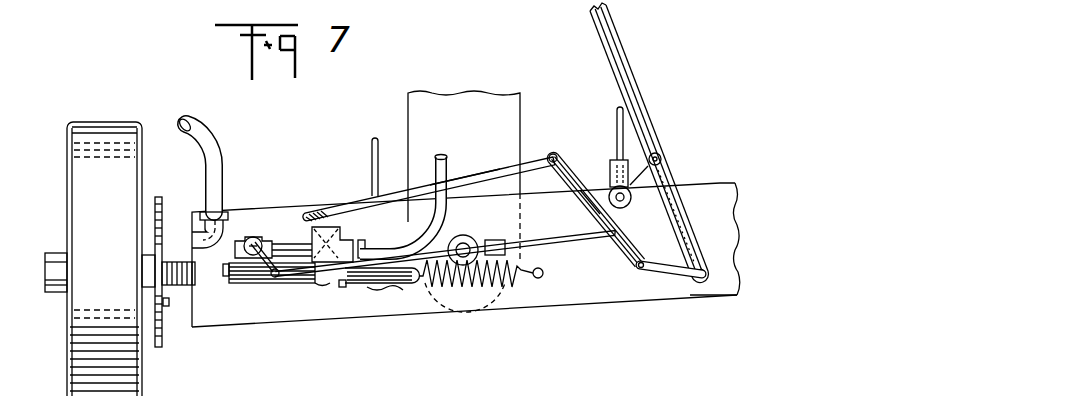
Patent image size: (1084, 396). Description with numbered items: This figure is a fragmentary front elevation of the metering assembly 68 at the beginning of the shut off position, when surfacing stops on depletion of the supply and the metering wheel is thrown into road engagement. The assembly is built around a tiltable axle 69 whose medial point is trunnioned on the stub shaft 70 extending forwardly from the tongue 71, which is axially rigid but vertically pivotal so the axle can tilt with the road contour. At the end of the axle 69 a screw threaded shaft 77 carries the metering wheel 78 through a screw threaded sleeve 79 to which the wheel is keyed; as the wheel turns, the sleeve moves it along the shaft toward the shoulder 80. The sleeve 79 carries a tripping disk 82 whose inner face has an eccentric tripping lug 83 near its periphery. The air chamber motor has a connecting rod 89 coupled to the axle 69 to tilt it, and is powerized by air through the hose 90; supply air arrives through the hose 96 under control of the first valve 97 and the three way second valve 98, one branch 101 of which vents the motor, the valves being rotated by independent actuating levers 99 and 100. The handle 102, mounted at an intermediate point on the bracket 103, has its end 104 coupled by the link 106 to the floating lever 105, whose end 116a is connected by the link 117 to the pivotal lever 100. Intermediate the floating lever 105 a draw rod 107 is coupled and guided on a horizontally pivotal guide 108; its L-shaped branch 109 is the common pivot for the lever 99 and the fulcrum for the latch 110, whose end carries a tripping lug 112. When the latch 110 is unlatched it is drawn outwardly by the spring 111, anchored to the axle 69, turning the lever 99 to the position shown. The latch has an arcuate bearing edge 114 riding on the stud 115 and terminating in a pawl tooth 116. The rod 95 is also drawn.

The metering assembly 68 is at (547, 316).
The tiltable axle 69 is at (717, 191).
The stub shaft 70 is at (461, 243).
The tongue 71 is at (486, 102).
The screw threaded shaft 77 is at (177, 262).
The metering wheel 78 is at (100, 124).
The screw threaded sleeve 79 is at (147, 258).
The shoulder 80 is at (195, 217).
The tripping disk 82 is at (158, 197).
The tripping lug 83 is at (170, 306).
The connecting rod 89 is at (613, 117).
The hose 90 is at (437, 166).
The rod 95 is at (370, 152).
The hose 96 is at (204, 130).
The first valve 97 is at (238, 237).
The second valve 98 is at (345, 230).
The actuating lever 99 is at (262, 240).
The actuating lever 100 is at (308, 232).
The branch 101 is at (340, 211).
The handle 102 is at (612, 45).
The bracket 103 is at (667, 164).
The end 104 is at (700, 298).
The floating lever 105 is at (582, 208).
The link 106 is at (660, 271).
The draw rod 107 is at (550, 241).
The horizontally pivotal guide 108 is at (494, 239).
The L-shaped branch 109 is at (278, 277).
The latch 110 is at (250, 283).
The spring 111 is at (447, 290).
The tripping lug 112 is at (226, 270).
The arcuate bearing edge 114 is at (325, 287).
The stud 115 is at (343, 288).
The pawl tooth 116 is at (395, 291).
The end 116a is at (553, 154).
The link 117 is at (483, 177).